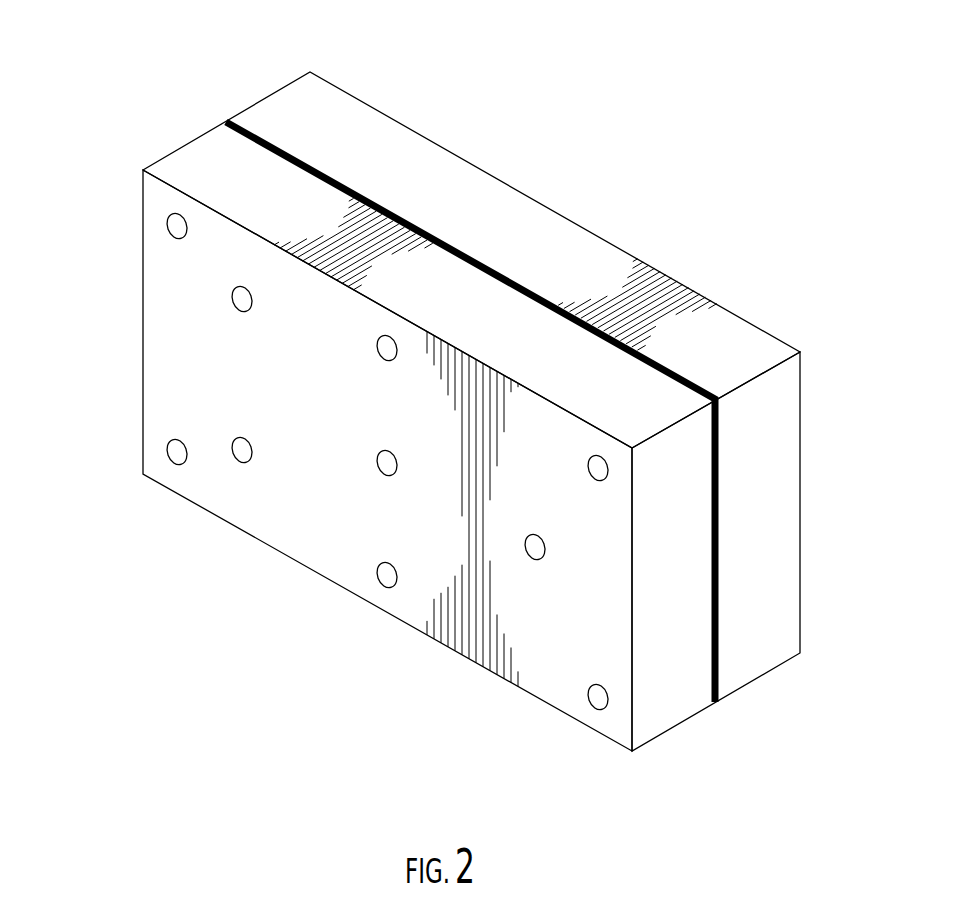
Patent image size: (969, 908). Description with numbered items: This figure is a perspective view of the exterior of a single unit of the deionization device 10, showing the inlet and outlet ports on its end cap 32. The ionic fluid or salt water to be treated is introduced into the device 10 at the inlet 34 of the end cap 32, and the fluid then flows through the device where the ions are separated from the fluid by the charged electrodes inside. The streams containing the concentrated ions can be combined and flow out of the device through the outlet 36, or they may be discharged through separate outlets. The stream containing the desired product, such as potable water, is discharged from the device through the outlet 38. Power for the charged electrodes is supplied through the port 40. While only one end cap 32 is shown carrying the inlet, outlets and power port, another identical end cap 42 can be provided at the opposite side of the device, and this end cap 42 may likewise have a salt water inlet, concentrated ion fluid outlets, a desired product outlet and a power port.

The device 10 is at (600, 130).
The end cap 32 is at (667, 733).
The inlet 34 is at (537, 553).
The outlet 36 is at (233, 448).
The outlet 38 is at (240, 300).
The port 40 is at (385, 472).
The end cap 42 is at (766, 673).